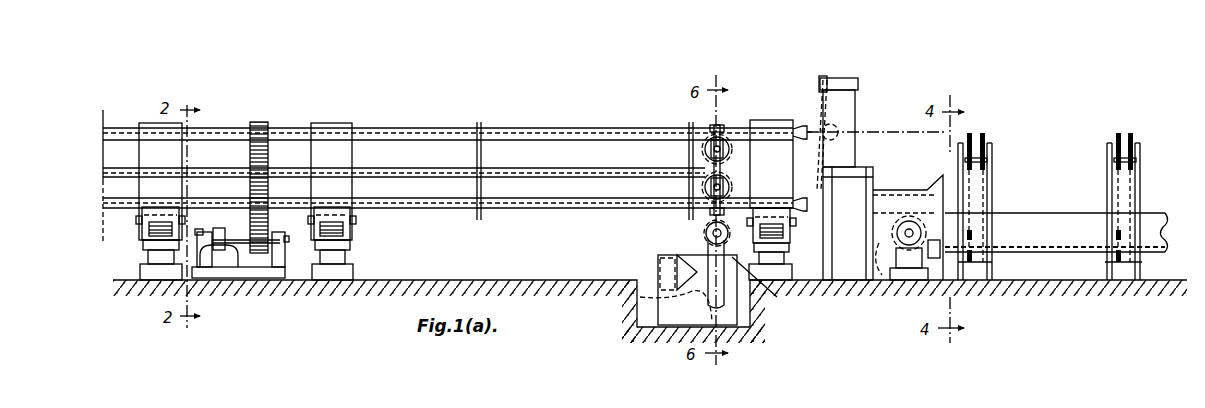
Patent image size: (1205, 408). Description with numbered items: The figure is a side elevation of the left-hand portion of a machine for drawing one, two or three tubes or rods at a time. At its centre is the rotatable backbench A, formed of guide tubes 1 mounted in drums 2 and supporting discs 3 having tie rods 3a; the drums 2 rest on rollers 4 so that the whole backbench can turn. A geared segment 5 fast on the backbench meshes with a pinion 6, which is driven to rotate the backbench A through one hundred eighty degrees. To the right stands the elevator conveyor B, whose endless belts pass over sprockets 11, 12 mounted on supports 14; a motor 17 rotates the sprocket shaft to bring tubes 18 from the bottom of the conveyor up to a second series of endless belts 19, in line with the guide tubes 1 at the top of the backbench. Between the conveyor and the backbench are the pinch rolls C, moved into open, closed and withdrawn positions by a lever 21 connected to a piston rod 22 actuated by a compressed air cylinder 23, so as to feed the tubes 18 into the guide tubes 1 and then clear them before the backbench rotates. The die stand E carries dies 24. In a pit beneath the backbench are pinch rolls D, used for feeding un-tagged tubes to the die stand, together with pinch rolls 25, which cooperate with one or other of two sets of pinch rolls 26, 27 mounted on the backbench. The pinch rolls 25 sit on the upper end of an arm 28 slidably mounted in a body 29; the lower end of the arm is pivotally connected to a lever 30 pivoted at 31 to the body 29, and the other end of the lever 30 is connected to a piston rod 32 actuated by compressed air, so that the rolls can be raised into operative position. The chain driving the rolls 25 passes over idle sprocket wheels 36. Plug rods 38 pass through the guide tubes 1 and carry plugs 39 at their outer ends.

The guide tubes 1 is at (580, 119).
The drums 2 is at (140, 122).
The supporting discs 3 is at (481, 122).
The tie rods 3a is at (572, 168).
The rollers 4 is at (152, 229).
The geared segment 5 is at (262, 122).
The pinion 6 is at (263, 263).
The sprockets 11 is at (992, 262).
The sprockets 12 is at (972, 132).
The supports 14 is at (1106, 172).
The motor 17 is at (907, 282).
The tubes 18 is at (914, 135).
The second series of endless belts 19 is at (987, 140).
The lever 21 is at (820, 86).
The piston rod 22 is at (830, 72).
The compressed air cylinder 23 is at (850, 78).
The dies 24 is at (935, 206).
The pinch rolls 25 is at (704, 237).
The pinch rolls 26 is at (702, 188).
The pinch rolls 27 is at (692, 122).
The arm 28 is at (761, 287).
The body 29 is at (672, 318).
The lever 30 is at (724, 318).
The pivot 31 is at (689, 304).
The piston rod 32 is at (677, 260).
The idle sprocket wheels 36 is at (636, 300).
The plug rods 38 is at (455, 117).
The plugs 39 is at (809, 136).
The rotatable backbench A is at (613, 152).
The elevator conveyor B is at (1056, 196).
The pinch rolls C is at (843, 112).
The pinch rolls D is at (705, 233).
The die stand E is at (873, 186).